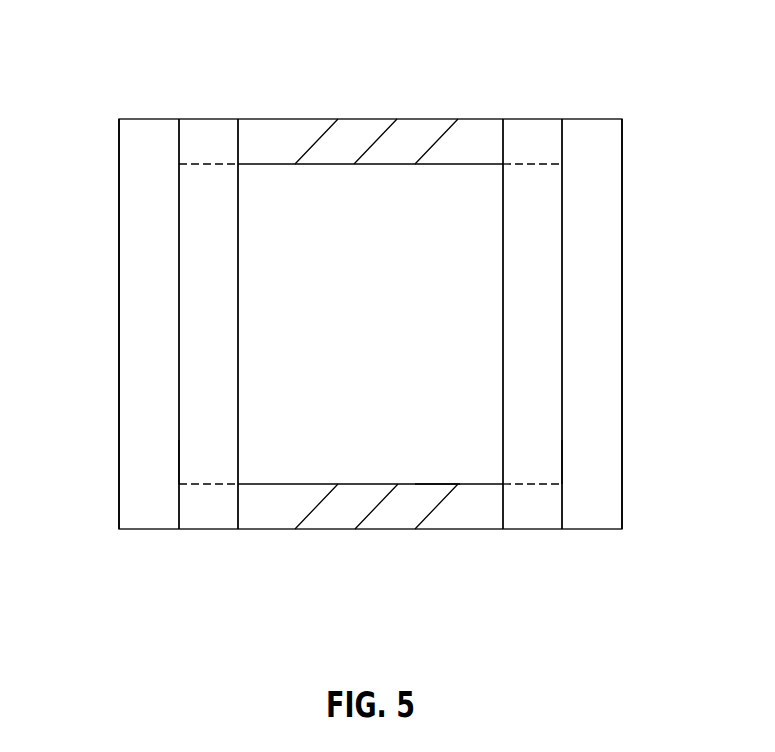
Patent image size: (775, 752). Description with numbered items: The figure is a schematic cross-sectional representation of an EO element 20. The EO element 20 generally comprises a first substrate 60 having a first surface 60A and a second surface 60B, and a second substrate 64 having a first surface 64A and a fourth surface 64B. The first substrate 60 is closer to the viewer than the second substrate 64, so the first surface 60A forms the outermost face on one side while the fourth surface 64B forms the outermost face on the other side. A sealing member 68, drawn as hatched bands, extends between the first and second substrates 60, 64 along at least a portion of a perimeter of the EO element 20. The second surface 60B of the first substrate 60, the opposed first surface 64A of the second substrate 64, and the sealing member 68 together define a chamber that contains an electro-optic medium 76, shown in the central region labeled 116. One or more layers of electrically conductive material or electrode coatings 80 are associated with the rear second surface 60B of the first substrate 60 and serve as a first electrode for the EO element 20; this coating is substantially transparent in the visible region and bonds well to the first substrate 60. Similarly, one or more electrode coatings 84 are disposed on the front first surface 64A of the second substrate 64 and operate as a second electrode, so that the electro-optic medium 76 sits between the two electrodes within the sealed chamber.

The EO element 20 is at (557, 105).
The first substrate 60 is at (150, 530).
The first surface 60A is at (119, 265).
The second surface 60B is at (178, 195).
The second substrate 64 is at (590, 530).
The first surface 64A is at (563, 195).
The fourth surface 64B is at (622, 265).
The sealing member 68 is at (305, 133).
The electro-optic medium 76 is at (442, 450).
The electrode coating 80 is at (205, 458).
The electrode coating 84 is at (535, 458).
The interior opening 116 is at (388, 325).